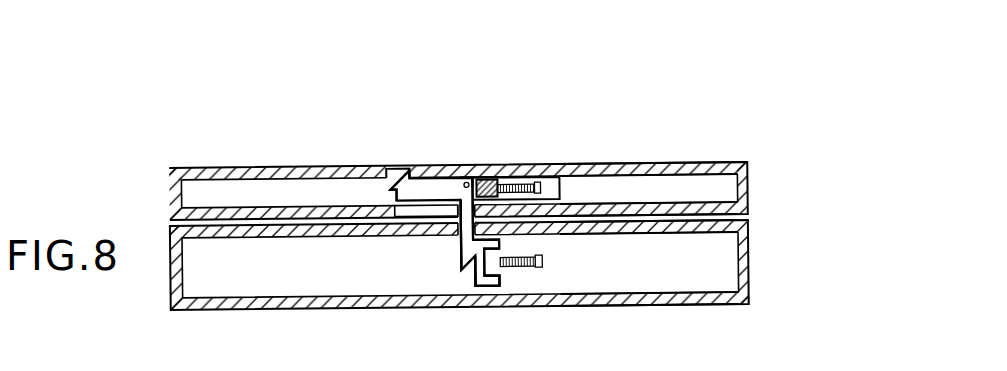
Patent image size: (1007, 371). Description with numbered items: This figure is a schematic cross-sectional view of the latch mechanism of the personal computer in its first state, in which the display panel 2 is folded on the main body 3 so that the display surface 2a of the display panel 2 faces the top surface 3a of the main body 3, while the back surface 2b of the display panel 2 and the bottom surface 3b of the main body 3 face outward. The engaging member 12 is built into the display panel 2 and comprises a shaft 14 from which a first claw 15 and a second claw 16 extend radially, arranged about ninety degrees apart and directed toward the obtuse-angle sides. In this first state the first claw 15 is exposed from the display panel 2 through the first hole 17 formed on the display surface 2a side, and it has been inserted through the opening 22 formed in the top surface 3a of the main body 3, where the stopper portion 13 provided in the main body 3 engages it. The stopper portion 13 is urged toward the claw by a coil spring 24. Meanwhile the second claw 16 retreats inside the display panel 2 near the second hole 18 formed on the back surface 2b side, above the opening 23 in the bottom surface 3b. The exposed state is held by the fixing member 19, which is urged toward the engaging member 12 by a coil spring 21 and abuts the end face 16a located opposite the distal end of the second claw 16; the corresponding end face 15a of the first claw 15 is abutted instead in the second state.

The display panel 2 is at (748, 188).
The display surface 2a is at (612, 206).
The back surface 2b is at (650, 162).
The main body 3 is at (750, 256).
The top surface 3a is at (672, 223).
The bottom surface 3b is at (667, 304).
The engaging member 12 is at (472, 157).
The stopper portion 13 is at (484, 285).
The shaft 14 is at (462, 180).
The first claw 15 is at (462, 272).
The end face 15a is at (468, 180).
The second claw 16 is at (393, 188).
The end face 16a is at (486, 182).
The first hole 17 is at (403, 216).
The second hole 18 is at (397, 175).
The fixing member 19 is at (470, 186).
The coil spring 21 is at (516, 187).
The opening 22 is at (458, 236).
The opening 23 is at (475, 287).
The coil spring 24 is at (516, 269).